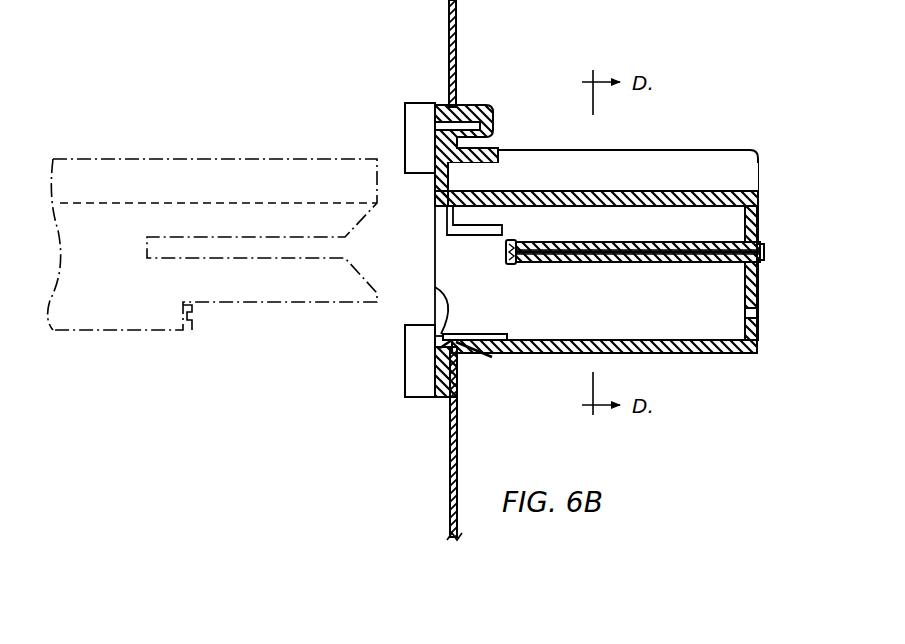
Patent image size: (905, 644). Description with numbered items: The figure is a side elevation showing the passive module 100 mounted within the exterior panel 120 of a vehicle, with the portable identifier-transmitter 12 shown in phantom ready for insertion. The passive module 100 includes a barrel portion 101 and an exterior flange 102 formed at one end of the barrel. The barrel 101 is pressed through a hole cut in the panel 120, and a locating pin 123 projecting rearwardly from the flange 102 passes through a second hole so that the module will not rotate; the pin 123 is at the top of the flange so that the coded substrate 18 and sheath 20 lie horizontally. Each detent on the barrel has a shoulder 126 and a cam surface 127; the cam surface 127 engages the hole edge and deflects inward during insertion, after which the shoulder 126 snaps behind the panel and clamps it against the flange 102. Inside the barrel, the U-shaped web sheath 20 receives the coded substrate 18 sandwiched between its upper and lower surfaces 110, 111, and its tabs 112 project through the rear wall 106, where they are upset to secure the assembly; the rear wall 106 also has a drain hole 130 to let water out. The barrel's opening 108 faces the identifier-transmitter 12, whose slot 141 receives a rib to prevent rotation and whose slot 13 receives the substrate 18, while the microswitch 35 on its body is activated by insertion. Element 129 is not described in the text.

The identifier-transmitter 12 is at (275, 158).
The slot 141 is at (173, 180).
The slot 13 is at (313, 243).
The microswitch 35 is at (192, 318).
The exterior panel 120 is at (428, 270).
The locating pin 123 is at (477, 137).
The barrel portion 101 is at (695, 158).
The rear wall 106 is at (760, 232).
The tabs 112 is at (764, 250).
The opening 108 is at (438, 252).
The lower surface 111 is at (608, 243).
The upper surface 110 is at (572, 262).
The coded substrate 18 is at (661, 262).
The web sheath 20 is at (506, 256).
The drain hole 130 is at (760, 312).
The shoulder 126 is at (433, 288).
The bar 129 is at (482, 334).
The cam surface 127 is at (462, 356).
The passive module 100 is at (676, 356).
The exterior flange 102 is at (440, 398).